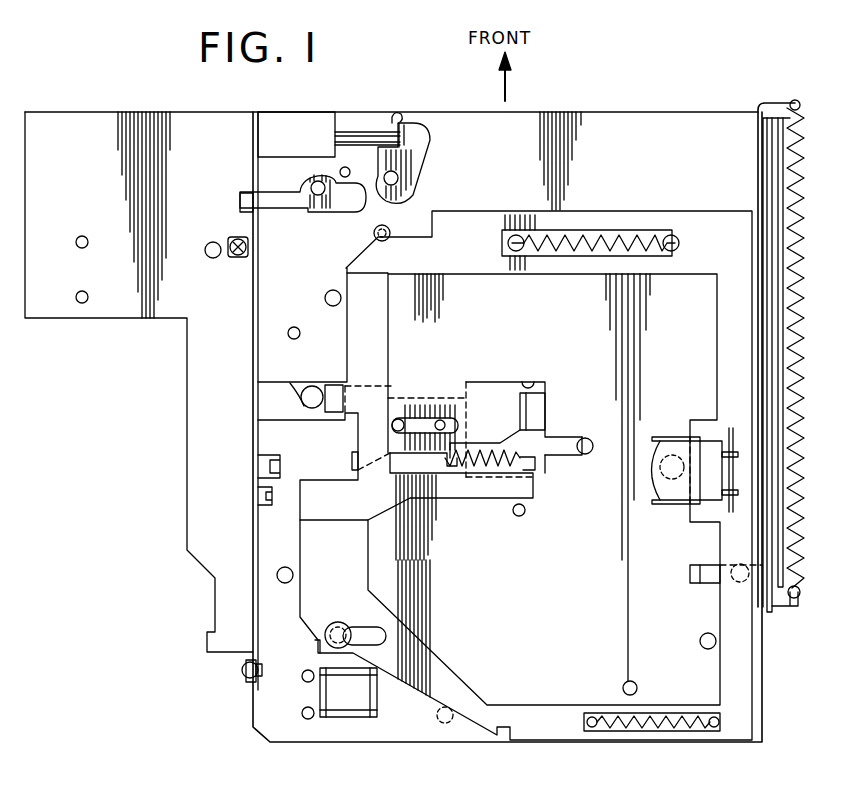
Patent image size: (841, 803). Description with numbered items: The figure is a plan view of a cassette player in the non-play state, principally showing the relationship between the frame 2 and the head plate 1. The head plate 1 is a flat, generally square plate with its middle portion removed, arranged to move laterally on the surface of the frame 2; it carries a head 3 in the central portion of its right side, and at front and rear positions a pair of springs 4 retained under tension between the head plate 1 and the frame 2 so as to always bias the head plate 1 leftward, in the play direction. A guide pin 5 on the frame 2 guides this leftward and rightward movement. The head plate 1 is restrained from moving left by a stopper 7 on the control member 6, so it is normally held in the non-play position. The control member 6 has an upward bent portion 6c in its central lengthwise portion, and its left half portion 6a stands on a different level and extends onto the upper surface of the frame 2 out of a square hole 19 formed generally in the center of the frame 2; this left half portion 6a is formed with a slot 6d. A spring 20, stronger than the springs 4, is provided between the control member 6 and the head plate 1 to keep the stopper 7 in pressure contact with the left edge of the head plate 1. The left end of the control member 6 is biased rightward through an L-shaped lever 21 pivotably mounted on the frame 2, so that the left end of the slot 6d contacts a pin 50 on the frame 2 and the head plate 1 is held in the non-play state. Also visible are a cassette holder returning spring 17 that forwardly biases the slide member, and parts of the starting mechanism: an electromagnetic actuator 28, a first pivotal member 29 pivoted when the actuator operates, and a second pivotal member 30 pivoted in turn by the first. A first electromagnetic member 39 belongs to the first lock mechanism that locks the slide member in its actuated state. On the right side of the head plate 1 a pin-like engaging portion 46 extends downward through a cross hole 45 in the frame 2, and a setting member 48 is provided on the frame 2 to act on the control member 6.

The head plate 1 is at (454, 258).
The frame 2 is at (666, 126).
The head 3 is at (656, 470).
The springs 4 is at (590, 242).
The guide pin 5 is at (390, 228).
The control member 6 is at (489, 414).
The left half portion 6a is at (398, 398).
The upward bent portion 6c is at (540, 409).
The slot 6d is at (440, 424).
The stopper 7 is at (351, 464).
The cassette holder returning spring 17 is at (800, 492).
The square hole 19 is at (530, 381).
The spring 20 is at (483, 472).
The L-shaped lever 21 is at (301, 394).
The electromagnetic actuator 28 is at (286, 140).
The first pivotal member 29 is at (418, 164).
The second pivotal member 30 is at (310, 212).
The first electromagnetic member 39 is at (343, 702).
The cross hole 45 is at (690, 575).
The engaging portion 46 is at (738, 584).
The setting member 48 is at (272, 498).
The pin 50 is at (400, 420).